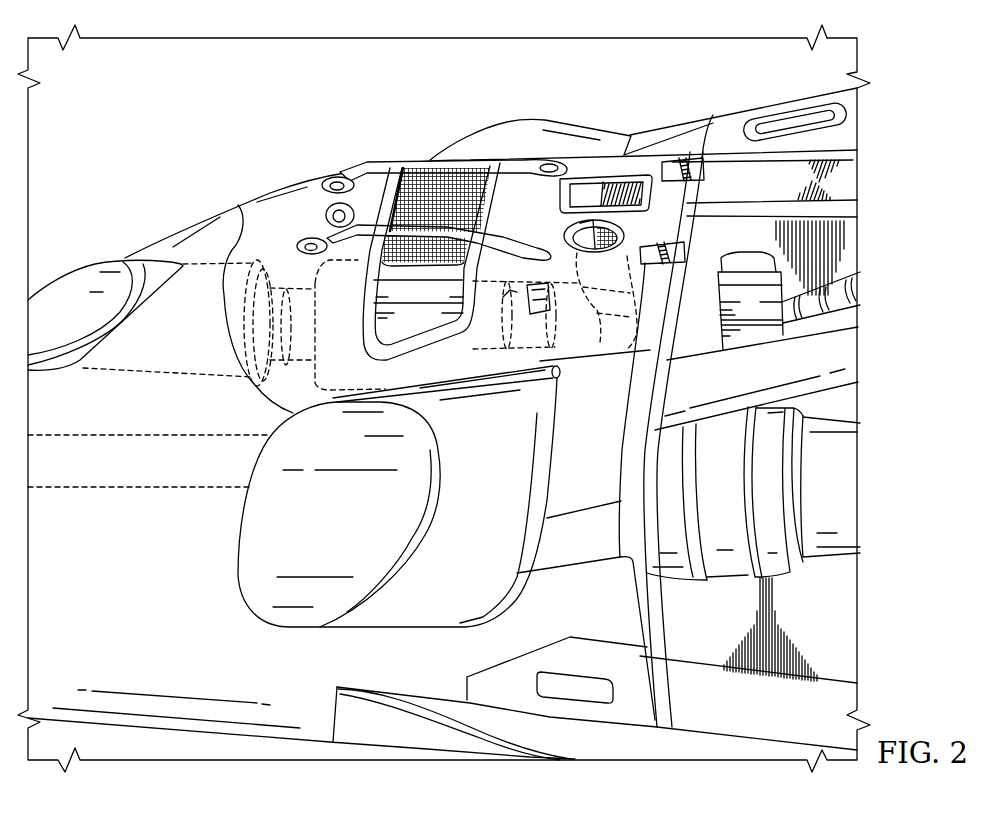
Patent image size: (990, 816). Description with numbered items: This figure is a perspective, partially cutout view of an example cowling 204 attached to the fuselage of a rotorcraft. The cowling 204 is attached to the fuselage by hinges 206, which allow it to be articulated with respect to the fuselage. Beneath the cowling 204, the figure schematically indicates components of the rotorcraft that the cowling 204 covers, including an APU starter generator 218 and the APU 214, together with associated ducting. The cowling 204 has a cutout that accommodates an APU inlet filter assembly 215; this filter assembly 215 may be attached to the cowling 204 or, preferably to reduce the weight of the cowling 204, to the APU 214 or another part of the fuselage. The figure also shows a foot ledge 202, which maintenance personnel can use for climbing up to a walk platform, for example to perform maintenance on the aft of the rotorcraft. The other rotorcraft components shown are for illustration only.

The foot ledge 202 is at (768, 746).
The cowling 204 is at (282, 190).
The hinges 206 is at (710, 166).
The APU 214 is at (319, 388).
The APU inlet filter assembly 215 is at (477, 203).
The APU starter generator 218 is at (580, 356).